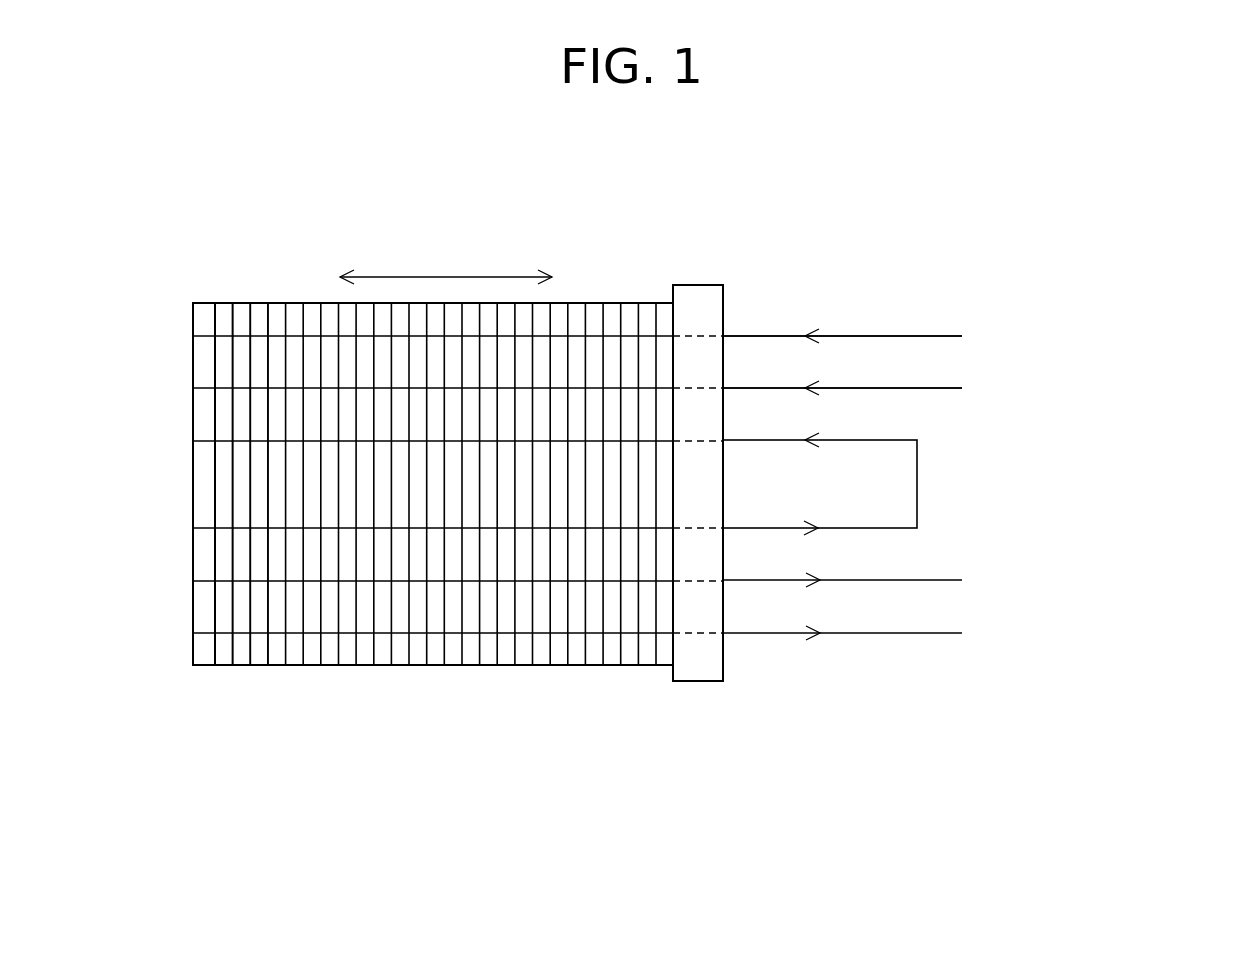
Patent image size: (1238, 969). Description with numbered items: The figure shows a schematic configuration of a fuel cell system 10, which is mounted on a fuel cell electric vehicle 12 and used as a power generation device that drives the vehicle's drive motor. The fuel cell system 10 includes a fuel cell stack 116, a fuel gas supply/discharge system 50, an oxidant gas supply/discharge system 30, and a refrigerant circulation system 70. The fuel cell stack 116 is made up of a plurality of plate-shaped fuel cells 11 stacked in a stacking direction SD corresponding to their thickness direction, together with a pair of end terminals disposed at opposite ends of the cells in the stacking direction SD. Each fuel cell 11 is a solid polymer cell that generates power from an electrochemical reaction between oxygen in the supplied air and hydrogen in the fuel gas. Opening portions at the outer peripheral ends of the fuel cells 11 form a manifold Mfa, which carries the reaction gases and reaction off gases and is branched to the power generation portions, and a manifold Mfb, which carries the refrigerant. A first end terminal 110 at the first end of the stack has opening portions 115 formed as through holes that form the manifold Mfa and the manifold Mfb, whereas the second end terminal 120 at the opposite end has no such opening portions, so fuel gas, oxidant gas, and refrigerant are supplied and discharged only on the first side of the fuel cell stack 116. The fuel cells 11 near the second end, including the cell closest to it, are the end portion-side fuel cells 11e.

The fuel cell system 10 is at (817, 240).
The fuel cells 11 is at (413, 666).
The end portion-side fuel cells 11e is at (223, 667).
The fuel cell electric vehicle 12 is at (957, 212).
The oxidant gas supply/discharge system 30 is at (963, 408).
The fuel gas supply/discharge system 50 is at (935, 311).
The refrigerant circulation system 70 is at (931, 511).
The first end terminal 110 is at (695, 683).
The opening portions 115 is at (700, 335).
The fuel cell stack 116 is at (248, 295).
The second end terminal 120 is at (204, 667).
The manifold Mfa is at (295, 388).
The manifold Mfb is at (267, 438).
The stacking direction SD is at (446, 262).